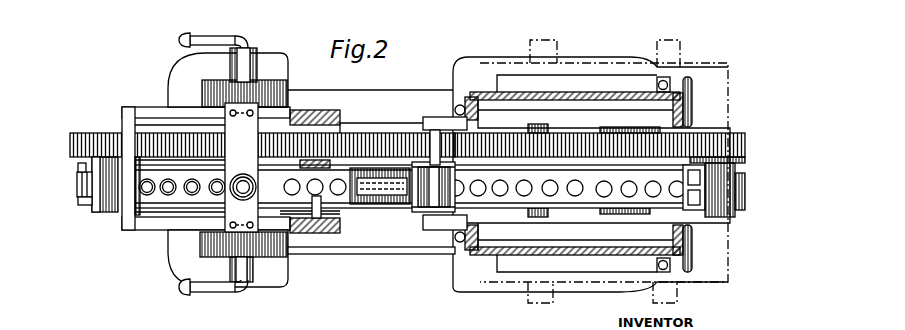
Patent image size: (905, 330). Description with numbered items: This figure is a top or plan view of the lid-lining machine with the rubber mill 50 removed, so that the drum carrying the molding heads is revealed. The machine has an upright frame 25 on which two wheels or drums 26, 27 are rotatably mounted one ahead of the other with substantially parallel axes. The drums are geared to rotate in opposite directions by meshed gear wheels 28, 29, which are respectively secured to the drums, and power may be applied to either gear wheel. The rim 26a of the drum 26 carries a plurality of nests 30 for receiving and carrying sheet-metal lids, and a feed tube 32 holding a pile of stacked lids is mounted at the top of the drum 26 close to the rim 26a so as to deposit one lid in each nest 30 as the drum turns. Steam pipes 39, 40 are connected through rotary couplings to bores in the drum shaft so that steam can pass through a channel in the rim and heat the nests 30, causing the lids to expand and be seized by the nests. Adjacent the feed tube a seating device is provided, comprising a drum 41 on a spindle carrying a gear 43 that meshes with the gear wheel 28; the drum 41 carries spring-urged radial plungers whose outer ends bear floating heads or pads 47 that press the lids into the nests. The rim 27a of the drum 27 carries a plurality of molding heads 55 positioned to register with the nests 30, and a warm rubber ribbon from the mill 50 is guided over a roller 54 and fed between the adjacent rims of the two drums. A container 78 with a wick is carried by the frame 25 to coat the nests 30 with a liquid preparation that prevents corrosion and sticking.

The upright frame 25 is at (395, 264).
The drum 26 is at (80, 205).
The rim of the drum 26a is at (79, 166).
The drum 27 is at (746, 205).
The rim of the drum 27a is at (745, 178).
The gear wheel 28 is at (92, 137).
The gear wheel 29 is at (742, 140).
The nests 30 is at (76, 184).
The feed tube 32 is at (243, 174).
The steam pipe 39 is at (218, 291).
The steam pipe 40 is at (211, 34).
The drum 41 is at (340, 195).
The gear 43 is at (348, 147).
The heads or pads 47 is at (314, 192).
The mill 50 is at (735, 67).
The roller 54 is at (426, 202).
The molding heads 55 is at (525, 193).
The container 78 is at (105, 213).